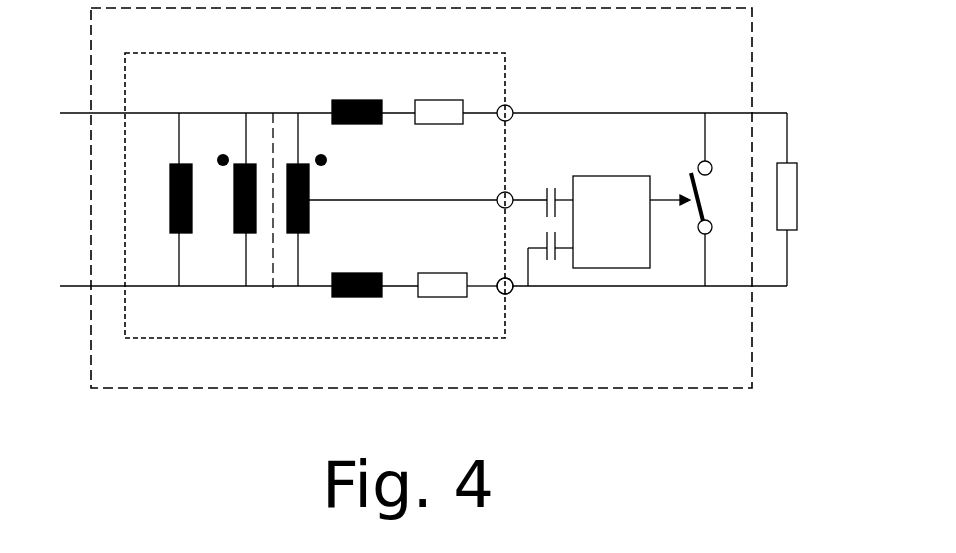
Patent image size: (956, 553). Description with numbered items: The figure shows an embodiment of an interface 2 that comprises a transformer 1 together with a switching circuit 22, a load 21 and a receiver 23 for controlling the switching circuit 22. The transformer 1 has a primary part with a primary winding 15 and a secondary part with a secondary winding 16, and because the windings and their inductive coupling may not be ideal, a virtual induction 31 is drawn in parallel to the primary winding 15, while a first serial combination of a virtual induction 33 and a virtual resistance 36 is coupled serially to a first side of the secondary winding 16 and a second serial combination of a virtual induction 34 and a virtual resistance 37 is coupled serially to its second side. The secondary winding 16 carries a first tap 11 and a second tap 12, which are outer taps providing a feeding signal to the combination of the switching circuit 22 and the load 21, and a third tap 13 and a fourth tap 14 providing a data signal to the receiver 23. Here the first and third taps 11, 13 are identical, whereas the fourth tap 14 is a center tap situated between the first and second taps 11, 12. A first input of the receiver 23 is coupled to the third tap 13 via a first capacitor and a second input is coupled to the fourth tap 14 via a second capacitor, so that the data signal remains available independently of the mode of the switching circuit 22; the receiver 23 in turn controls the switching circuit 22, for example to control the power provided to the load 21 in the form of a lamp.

The transformer 1 is at (472, 338).
The interface 2 is at (710, 388).
The first tap 11 is at (511, 293).
The second tap 12 is at (511, 106).
The third tap 13 is at (505, 286).
The fourth tap 14 is at (511, 194).
The primary winding 15 is at (235, 199).
The secondary winding 16 is at (392, 199).
The load 21 is at (797, 197).
The switching circuit 22 is at (699, 198).
The receiver 23 is at (601, 213).
The virtual induction 31 is at (167, 199).
The virtual induction 33 is at (357, 94).
The virtual induction 34 is at (357, 300).
The virtual resistance 36 is at (439, 94).
The virtual resistance 37 is at (442, 300).